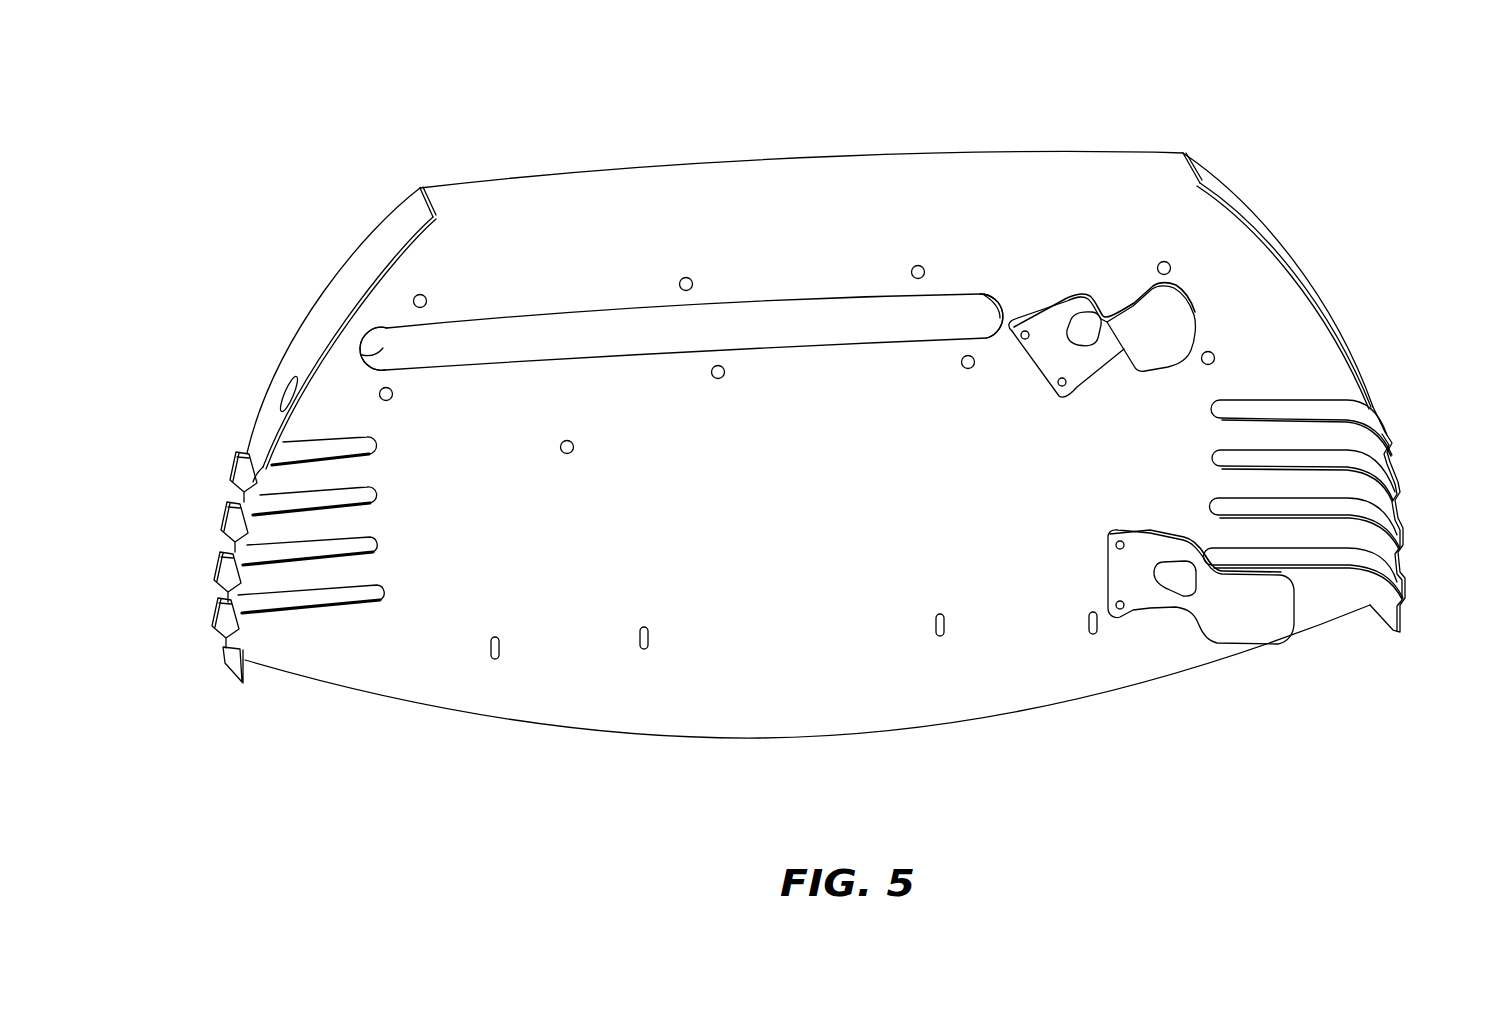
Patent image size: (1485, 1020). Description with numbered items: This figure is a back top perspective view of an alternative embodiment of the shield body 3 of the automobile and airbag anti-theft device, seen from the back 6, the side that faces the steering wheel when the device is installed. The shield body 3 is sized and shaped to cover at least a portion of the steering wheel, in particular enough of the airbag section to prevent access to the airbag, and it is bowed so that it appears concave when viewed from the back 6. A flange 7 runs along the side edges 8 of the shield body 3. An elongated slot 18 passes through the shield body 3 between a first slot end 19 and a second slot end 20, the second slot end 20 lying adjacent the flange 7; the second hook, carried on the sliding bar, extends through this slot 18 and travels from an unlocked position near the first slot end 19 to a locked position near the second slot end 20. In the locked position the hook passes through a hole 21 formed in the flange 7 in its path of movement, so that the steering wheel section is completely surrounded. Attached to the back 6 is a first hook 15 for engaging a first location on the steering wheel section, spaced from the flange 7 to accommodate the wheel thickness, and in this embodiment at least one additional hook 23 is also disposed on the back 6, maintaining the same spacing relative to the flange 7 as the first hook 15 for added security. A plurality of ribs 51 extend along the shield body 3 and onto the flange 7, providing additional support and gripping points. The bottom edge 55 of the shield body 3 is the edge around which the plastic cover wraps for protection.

The shield body 3 is at (590, 163).
The back 6 is at (809, 523).
The flange 7 is at (382, 245).
The side edges 8 is at (422, 186).
The first hook 15 is at (1250, 622).
The slot 18 is at (793, 323).
The first slot end 19 is at (983, 292).
The second slot end 20 is at (377, 352).
The hole 21 is at (283, 397).
The additional hook 23 is at (1152, 330).
The ribs 51 is at (222, 575).
The bottom edge 55 is at (707, 740).